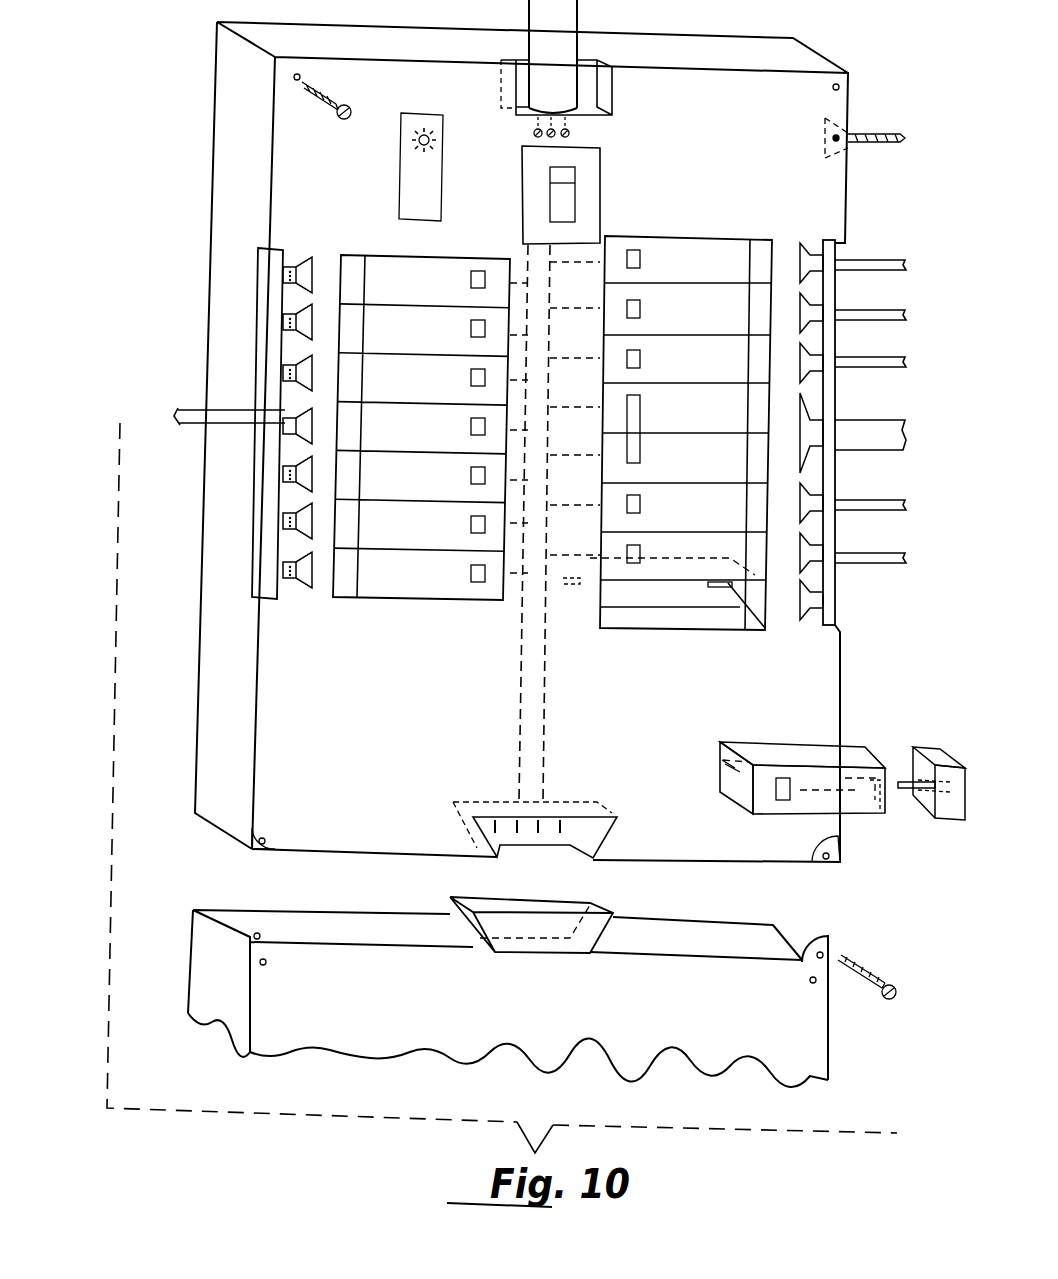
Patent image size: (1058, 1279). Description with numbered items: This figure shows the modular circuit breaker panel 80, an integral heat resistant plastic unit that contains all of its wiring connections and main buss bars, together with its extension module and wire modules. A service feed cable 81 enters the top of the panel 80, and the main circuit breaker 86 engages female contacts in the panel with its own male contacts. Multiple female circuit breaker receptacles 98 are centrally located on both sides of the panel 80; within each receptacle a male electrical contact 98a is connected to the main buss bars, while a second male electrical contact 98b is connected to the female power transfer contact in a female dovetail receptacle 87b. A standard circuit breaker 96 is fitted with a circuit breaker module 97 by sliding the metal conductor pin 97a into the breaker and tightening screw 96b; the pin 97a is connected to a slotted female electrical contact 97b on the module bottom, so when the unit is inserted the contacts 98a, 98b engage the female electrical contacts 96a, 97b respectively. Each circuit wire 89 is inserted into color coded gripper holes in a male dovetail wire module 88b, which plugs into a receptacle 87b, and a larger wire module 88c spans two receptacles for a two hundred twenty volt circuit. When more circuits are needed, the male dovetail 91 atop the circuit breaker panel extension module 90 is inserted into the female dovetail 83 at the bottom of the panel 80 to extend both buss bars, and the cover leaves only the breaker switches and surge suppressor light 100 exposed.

The modular circuit breaker panel 80 is at (205, 165).
The service feed cable 81 is at (590, 22).
The female dovetail 83 is at (470, 825).
The main circuit breaker 86 is at (604, 190).
The female dovetail receptacle 87b is at (295, 322).
The wire module 88b is at (298, 432).
The larger wire module 88c is at (808, 405).
The wire 89 is at (188, 408).
The circuit breaker panel extension module 90 is at (830, 1052).
The male dovetail 91 is at (610, 905).
The circuit breaker 96 is at (740, 240).
The female electrical contact 96a is at (720, 762).
The screw 96b is at (875, 815).
The circuit breaker module 97 is at (347, 605).
The metal conductor pin 97a is at (905, 790).
The slotted female electrical contact 97b is at (915, 752).
The female circuit breaker receptacle 98 is at (384, 248).
The male electrical contact 98a is at (570, 595).
The male electrical contact 98b is at (718, 590).
The surge suppressor light 100 is at (418, 115).